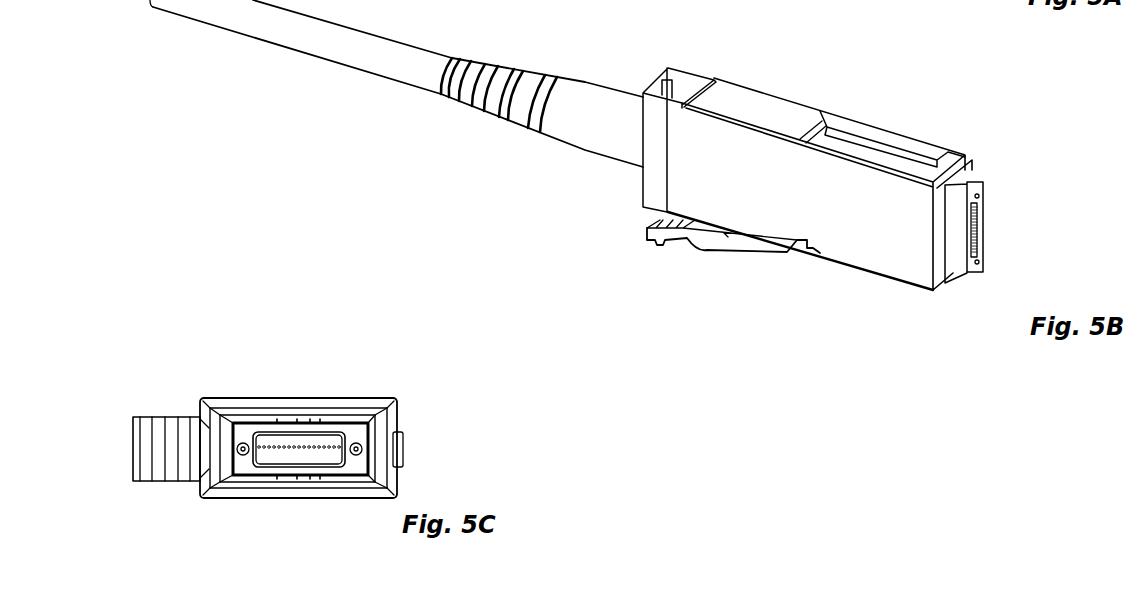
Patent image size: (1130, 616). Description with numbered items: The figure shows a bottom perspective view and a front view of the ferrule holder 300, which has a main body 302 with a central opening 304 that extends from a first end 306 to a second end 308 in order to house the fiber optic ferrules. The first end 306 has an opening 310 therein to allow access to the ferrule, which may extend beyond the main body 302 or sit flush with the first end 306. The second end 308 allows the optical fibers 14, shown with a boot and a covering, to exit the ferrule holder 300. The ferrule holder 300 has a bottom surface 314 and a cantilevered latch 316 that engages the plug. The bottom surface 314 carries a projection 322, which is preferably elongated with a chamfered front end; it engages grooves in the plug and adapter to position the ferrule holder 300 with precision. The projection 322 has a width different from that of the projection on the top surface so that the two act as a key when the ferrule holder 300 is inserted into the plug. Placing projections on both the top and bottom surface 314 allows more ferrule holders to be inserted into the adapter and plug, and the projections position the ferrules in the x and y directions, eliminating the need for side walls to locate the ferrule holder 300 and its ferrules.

In FIG. 5B, the optical fibers 14 is at (305, 54).
In FIG. 5B, the ferrule holder 300 is at (973, 106).
In FIG. 5C, the ferrule holder 300 is at (427, 385).
In FIG. 5B, the main body 302 is at (858, 248).
In FIG. 5A, the central opening 304 is at (947, 0).
In FIG. 5B, the first end 306 is at (938, 291).
In FIG. 5C, the first end 306 is at (235, 422).
In FIG. 5B, the second end 308 is at (697, 82).
In FIG. 5C, the second end 308 is at (312, 421).
In FIG. 5B, the opening 310 is at (983, 176).
In FIG. 5B, the bottom surface 314 is at (745, 101).
In FIG. 5C, the cantilevered latch 316 is at (133, 445).
In FIG. 5B, the projection 322 is at (860, 134).